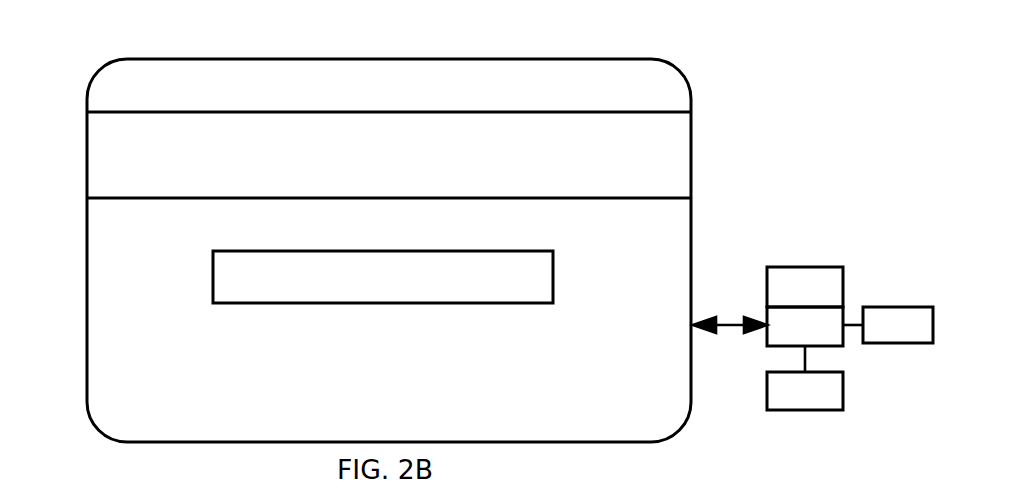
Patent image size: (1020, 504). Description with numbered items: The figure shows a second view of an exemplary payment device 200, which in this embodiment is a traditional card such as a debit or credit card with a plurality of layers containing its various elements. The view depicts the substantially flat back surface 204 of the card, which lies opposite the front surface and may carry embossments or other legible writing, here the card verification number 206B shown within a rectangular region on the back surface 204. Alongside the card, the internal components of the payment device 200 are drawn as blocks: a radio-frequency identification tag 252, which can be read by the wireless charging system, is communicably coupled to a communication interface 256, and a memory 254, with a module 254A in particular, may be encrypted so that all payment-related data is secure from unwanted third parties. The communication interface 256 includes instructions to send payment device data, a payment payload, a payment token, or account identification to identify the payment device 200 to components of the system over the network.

The payment device 200 is at (199, 63).
The back surface 204 is at (670, 238).
The card verification number 206B is at (522, 253).
The radio-frequency identification tag 252 is at (805, 287).
The memory 254 is at (815, 339).
The module 254A is at (898, 325).
The communication interface 256 is at (805, 391).